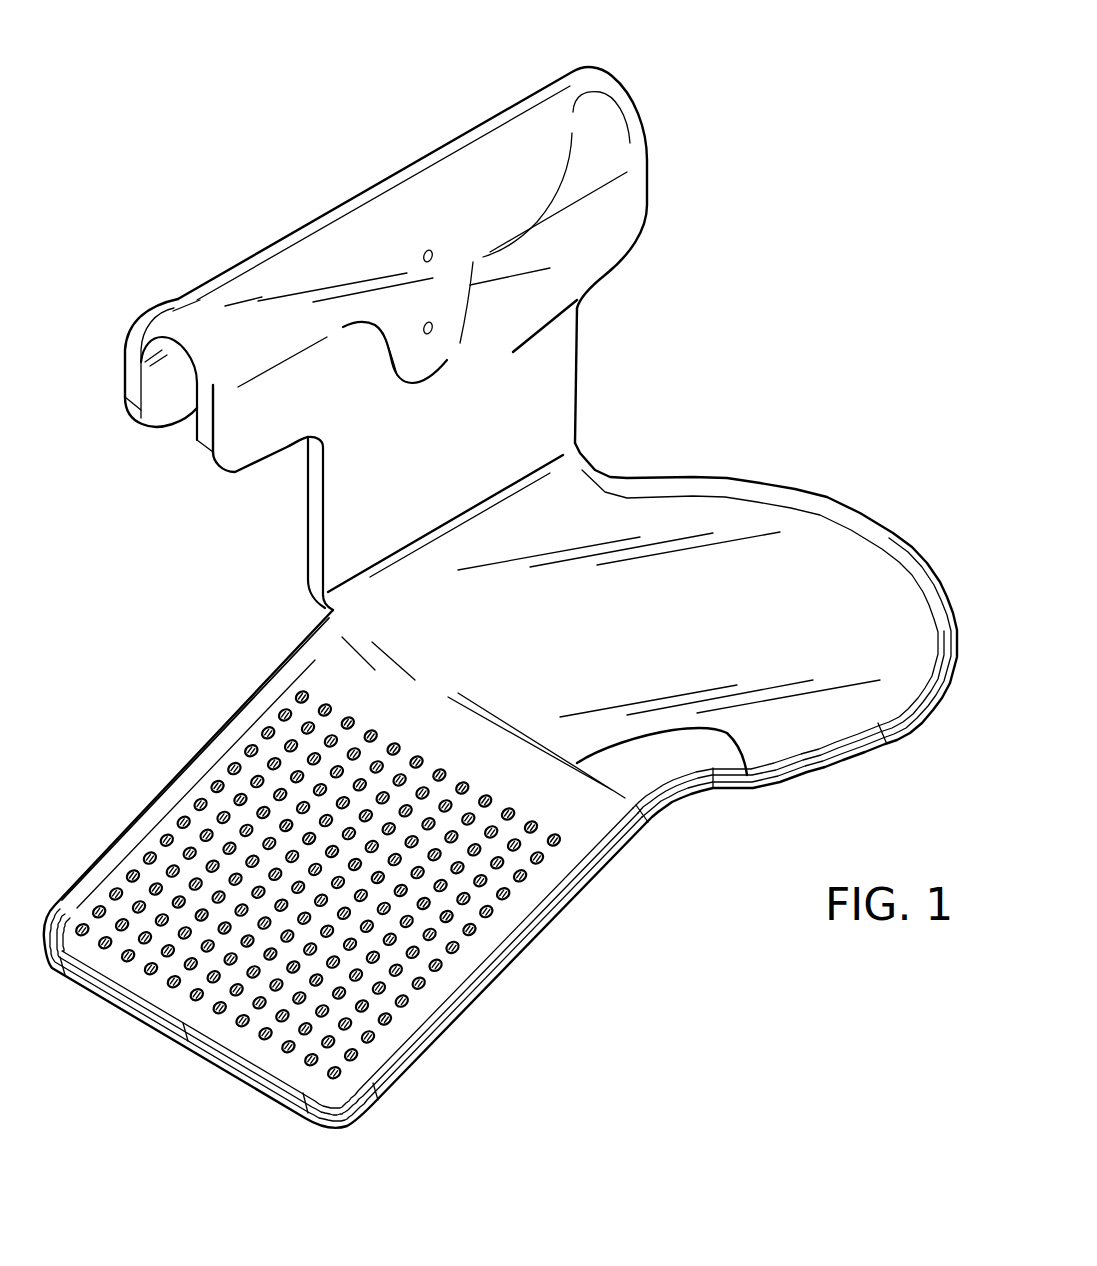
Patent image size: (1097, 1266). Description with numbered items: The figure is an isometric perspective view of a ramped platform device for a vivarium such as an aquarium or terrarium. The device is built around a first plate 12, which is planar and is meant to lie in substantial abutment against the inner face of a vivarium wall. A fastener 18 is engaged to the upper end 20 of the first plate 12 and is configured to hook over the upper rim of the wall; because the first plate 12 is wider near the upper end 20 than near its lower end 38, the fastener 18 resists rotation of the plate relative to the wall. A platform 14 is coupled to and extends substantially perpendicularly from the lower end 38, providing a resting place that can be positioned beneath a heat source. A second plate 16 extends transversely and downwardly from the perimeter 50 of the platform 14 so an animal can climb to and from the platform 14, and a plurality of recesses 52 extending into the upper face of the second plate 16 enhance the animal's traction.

The first plate 12 is at (578, 308).
The platform 14 is at (710, 587).
The second plate 16 is at (553, 905).
The fastener 18 is at (535, 132).
The upper end 20 is at (622, 171).
The lower end 38 is at (542, 447).
The perimeter 50 is at (910, 547).
The recesses 52 is at (369, 922).